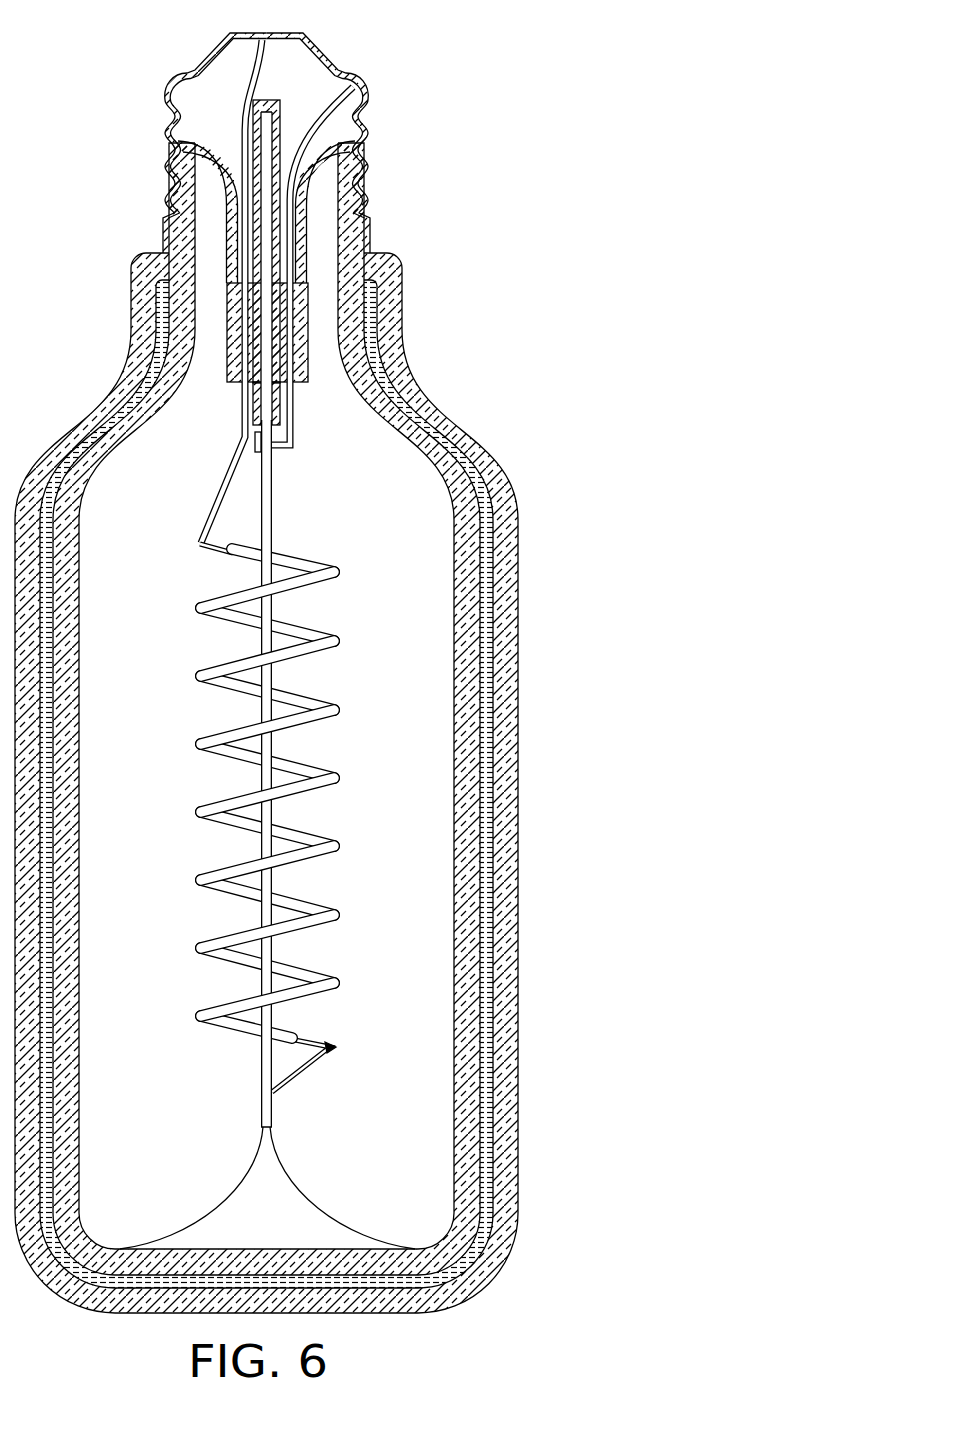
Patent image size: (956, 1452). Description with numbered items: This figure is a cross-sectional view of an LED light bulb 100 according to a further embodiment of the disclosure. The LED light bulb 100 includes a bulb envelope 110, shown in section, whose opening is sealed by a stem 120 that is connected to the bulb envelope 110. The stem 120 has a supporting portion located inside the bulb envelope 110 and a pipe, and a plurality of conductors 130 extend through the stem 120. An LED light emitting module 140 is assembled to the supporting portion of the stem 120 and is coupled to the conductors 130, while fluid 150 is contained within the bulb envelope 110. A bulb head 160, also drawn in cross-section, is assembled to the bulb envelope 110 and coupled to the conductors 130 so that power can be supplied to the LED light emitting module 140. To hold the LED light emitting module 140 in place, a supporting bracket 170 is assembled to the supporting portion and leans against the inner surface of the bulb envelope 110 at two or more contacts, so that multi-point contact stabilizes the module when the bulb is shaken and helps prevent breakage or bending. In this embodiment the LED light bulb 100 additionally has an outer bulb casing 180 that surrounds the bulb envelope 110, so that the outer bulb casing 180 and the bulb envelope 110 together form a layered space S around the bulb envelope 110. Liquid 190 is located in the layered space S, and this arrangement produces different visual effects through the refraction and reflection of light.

The LED light bulb 100 is at (323, 657).
The bulb envelope 110 is at (302, 728).
The stem 120 is at (324, 307).
The conductors 130 is at (252, 65).
The LED light emitting module 140 is at (343, 834).
The fluid 150 is at (418, 523).
The bulb head 160 is at (163, 125).
The supporting bracket 170 is at (302, 1134).
The outer bulb casing 180 is at (507, 652).
The liquid 190 is at (485, 608).
The layered space S is at (494, 920).